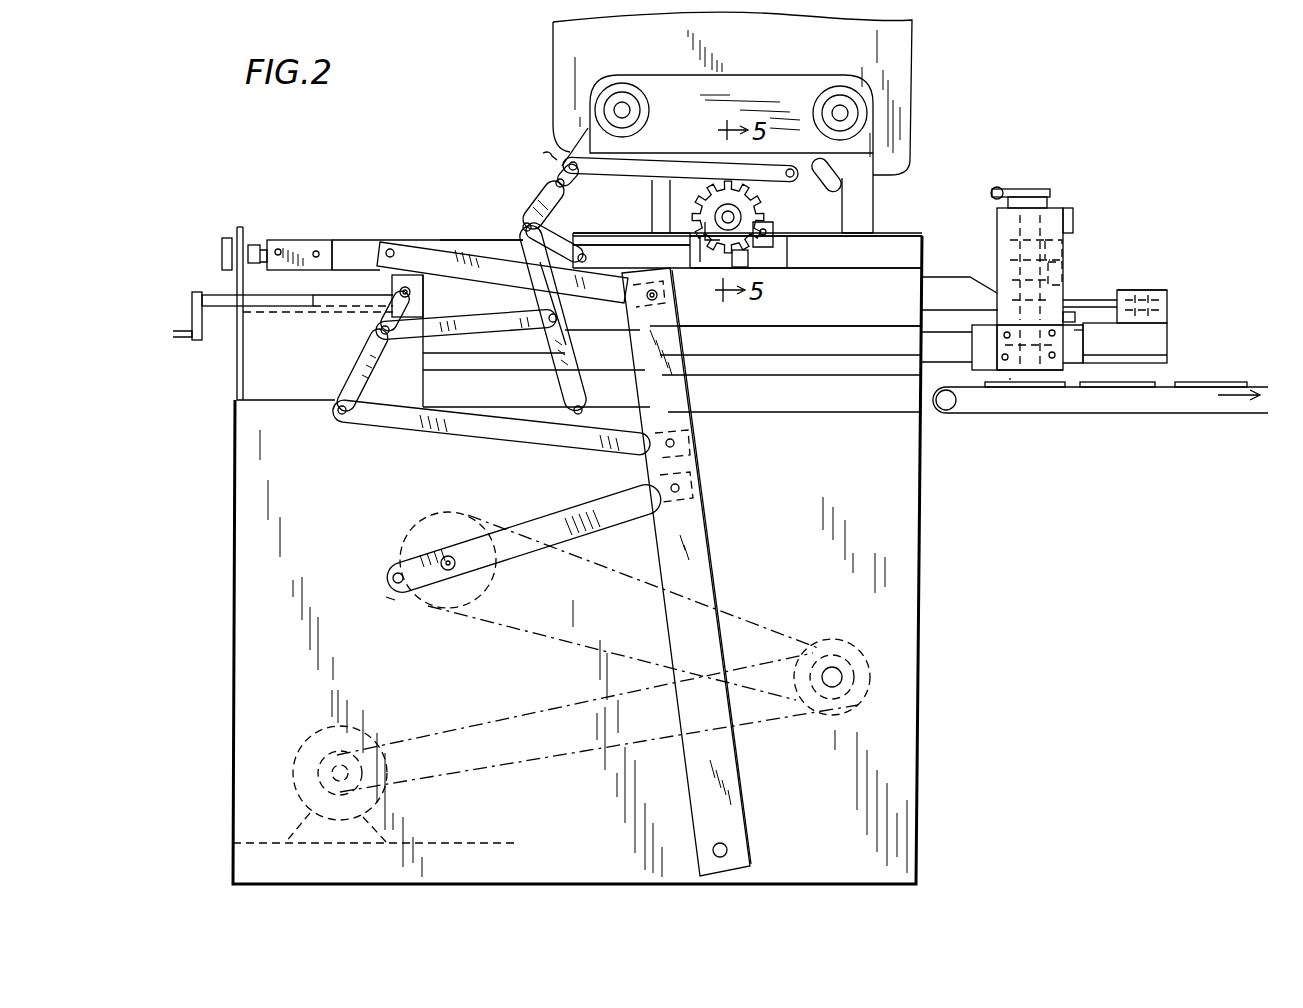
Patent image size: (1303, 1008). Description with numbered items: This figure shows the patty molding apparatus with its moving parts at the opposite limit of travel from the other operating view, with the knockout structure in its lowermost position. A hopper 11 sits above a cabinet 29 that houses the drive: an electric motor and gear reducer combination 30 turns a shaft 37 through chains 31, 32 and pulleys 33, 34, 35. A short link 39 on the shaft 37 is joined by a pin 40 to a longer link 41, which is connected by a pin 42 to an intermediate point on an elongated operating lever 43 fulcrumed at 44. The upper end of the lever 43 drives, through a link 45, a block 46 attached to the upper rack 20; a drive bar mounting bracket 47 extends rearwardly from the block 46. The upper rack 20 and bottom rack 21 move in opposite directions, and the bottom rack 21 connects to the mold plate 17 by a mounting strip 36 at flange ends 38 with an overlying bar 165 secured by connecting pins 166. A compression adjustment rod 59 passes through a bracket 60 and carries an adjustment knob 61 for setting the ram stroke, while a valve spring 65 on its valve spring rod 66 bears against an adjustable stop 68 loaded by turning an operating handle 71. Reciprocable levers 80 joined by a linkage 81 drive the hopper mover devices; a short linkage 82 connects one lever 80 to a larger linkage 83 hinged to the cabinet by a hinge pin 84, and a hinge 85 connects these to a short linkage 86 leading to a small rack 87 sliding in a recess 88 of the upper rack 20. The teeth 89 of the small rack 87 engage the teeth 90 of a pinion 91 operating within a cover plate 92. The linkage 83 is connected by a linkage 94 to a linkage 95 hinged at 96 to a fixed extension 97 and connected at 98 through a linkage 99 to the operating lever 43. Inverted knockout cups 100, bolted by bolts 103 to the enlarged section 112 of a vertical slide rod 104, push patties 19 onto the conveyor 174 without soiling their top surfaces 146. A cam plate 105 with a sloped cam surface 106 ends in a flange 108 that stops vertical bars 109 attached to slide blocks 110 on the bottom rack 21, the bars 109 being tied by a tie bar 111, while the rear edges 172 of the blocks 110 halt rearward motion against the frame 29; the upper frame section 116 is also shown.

The hopper 11 is at (905, 42).
The mold plate 17 is at (1105, 300).
The patties 19 is at (1045, 395).
The upper rack 20 is at (495, 245).
The bottom rack 21 is at (1090, 318).
The cabinet 29 is at (925, 527).
The electric motor and gear reducer combination 30 is at (328, 730).
The chain 31 is at (515, 770).
The chain 32 is at (565, 645).
The pulley 33 is at (833, 665).
The pulley 34 is at (852, 652).
The pulley 35 is at (405, 525).
The mounting strip 36 is at (1170, 328).
The shaft 37 is at (448, 556).
The flange ends 38 is at (1170, 358).
The short link 39 is at (400, 600).
The pin 40 is at (392, 580).
The longer link 41 is at (545, 515).
The pin 42 is at (690, 487).
The operating lever 43 is at (705, 530).
The fulcrum 44 is at (727, 848).
The link 45 is at (580, 285).
The block 46 is at (355, 240).
The drive bar mounting bracket 47 is at (292, 240).
The compression adjustment rod 59 is at (258, 245).
The bracket 60 is at (240, 368).
The adjustment knob 61 is at (213, 240).
The spring 65 is at (345, 320).
The valve spring rod 66 is at (325, 320).
The adjustable stop 68 is at (262, 312).
The operating handle 71 is at (192, 312).
The reciprocable lever 80 is at (558, 157).
The linkage 81 is at (643, 168).
The short linkage 82 is at (552, 178).
The larger linkage 83 is at (535, 305).
The hinge pin 84 is at (565, 390).
The hinge 85 is at (532, 205).
The short linkage 86 is at (560, 240).
The small rack 87 is at (625, 250).
The recess 88 is at (780, 258).
The teeth 89 is at (700, 238).
The teeth 90 is at (713, 212).
The pinion 91 is at (745, 207).
The cover plate 92 is at (707, 270).
The linkage 94 is at (457, 322).
The linkage 95 is at (373, 363).
The hinge 96 is at (385, 290).
The fixed extension 97 is at (416, 250).
The hinge 98 is at (343, 420).
The linkage 99 is at (418, 428).
The knockout cup 100 is at (1067, 305).
The bolt 103 is at (1075, 250).
The vertical slide rod 104 is at (998, 228).
The cam plate 105 is at (972, 309).
The cam surface 106 is at (985, 290).
The right angle flange 108 is at (1075, 335).
The vertical bar 109 is at (1050, 205).
The slide block 110 is at (1080, 358).
The tie bar 111 is at (1078, 215).
The enlarged section 112 is at (1070, 270).
The frame section 116 is at (840, 309).
The top surfaces 146 is at (1010, 380).
The overlying bar 165 is at (1185, 297).
The connecting pins 166 is at (1158, 290).
The rear edge 172 is at (985, 347).
The conveyor 174 is at (1210, 413).